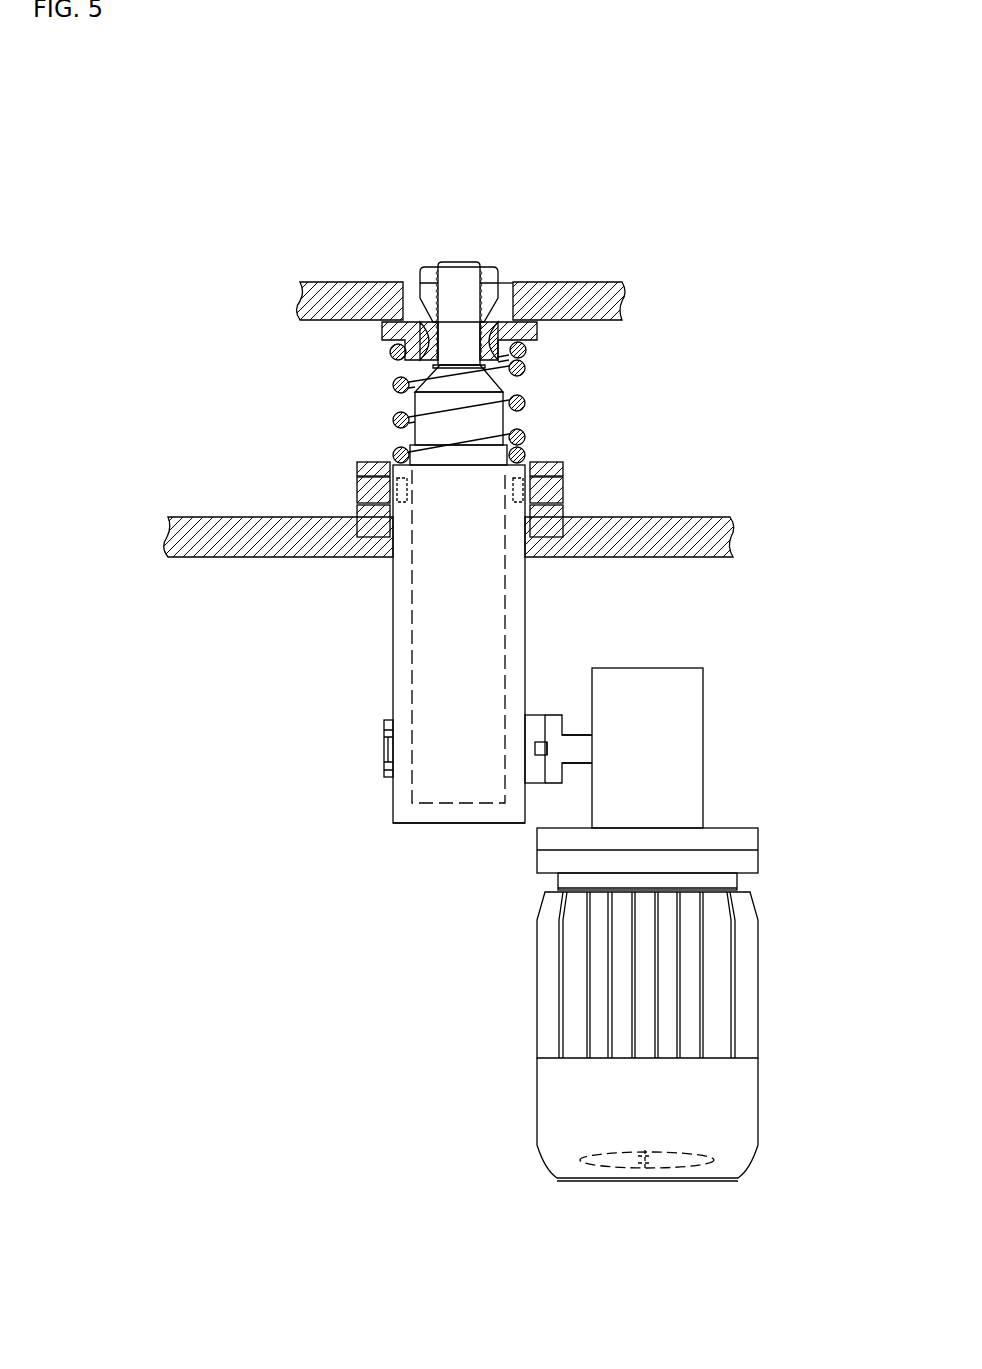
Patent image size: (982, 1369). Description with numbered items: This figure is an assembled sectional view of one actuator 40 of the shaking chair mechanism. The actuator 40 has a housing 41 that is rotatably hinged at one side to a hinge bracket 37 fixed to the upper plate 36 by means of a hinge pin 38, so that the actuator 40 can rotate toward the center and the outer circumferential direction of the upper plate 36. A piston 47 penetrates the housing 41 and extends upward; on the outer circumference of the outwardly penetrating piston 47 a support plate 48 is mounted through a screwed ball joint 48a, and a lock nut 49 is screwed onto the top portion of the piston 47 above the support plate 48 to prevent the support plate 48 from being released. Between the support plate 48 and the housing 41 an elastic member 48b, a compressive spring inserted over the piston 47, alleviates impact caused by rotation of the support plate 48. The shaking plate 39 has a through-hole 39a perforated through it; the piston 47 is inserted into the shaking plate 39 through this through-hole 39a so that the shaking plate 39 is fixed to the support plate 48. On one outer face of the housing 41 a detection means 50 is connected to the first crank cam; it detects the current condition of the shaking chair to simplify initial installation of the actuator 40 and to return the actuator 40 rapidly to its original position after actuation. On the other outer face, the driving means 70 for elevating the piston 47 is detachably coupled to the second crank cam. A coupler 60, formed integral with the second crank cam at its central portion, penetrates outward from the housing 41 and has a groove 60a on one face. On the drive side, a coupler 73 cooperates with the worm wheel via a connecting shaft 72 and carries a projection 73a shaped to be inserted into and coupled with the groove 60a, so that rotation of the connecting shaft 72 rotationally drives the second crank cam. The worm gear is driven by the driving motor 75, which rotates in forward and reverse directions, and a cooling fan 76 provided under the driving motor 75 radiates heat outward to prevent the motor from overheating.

The upper plate 36 is at (245, 553).
The hinge bracket 37 is at (563, 465).
The hinge pin 38 is at (556, 488).
The shaking plate 39 is at (345, 282).
The through-hole 39a is at (507, 287).
The actuator 40 is at (392, 667).
The housing 41 is at (437, 818).
The piston 47 is at (458, 268).
The support plate 48 is at (383, 325).
The ball joint 48a is at (512, 335).
The elastic member 48b is at (526, 402).
The lock nut 49 is at (490, 268).
The detection means 50 is at (382, 748).
The coupler 60 is at (533, 717).
The groove 60a is at (535, 748).
The driving means 70 is at (706, 758).
The connecting shaft 72 is at (577, 758).
The coupler 73 is at (562, 718).
The projection 73a is at (547, 755).
The driving motor 75 is at (738, 983).
The cooling fan 76 is at (644, 1150).